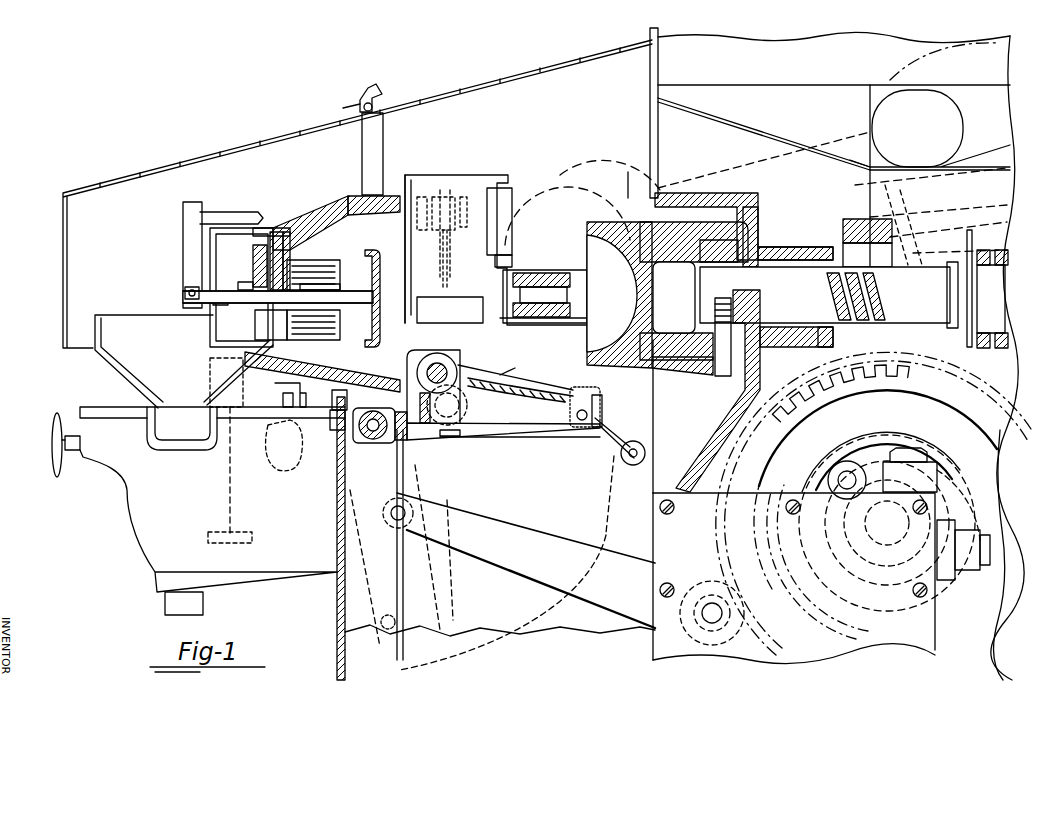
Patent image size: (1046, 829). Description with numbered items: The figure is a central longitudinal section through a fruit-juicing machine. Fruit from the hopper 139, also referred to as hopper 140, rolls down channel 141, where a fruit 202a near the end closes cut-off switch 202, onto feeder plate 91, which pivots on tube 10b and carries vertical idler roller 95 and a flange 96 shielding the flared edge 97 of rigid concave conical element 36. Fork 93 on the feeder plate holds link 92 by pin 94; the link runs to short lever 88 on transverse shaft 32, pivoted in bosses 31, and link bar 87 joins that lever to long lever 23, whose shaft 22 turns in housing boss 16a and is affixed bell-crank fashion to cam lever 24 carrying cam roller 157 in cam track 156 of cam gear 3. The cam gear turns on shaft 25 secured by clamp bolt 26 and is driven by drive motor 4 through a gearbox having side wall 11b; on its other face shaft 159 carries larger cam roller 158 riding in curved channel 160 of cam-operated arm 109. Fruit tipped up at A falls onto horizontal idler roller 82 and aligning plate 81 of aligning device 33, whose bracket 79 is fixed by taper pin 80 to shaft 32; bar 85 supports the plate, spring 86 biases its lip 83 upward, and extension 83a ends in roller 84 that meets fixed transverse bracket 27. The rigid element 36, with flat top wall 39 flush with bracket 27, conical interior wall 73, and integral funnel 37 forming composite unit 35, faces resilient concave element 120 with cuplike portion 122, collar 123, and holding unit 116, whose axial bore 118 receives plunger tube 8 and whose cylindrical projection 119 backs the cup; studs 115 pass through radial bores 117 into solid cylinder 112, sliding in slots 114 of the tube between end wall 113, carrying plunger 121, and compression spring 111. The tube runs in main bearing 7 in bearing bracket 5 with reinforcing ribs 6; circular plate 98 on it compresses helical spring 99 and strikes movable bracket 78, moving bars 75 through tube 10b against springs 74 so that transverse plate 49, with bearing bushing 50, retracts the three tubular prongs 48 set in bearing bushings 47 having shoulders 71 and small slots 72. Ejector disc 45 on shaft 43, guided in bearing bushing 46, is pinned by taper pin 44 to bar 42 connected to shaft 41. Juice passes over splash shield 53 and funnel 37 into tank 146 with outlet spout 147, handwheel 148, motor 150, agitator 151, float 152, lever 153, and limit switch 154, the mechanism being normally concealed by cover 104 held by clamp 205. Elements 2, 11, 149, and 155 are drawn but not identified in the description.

The cover 104 is at (106, 182).
The clamp 205 is at (357, 94).
The flat top wall 39 is at (350, 194).
The rigid concave conical element 36 is at (312, 218).
The conical interior wall 73 is at (287, 228).
The small slots 72 is at (286, 230).
The shoulders 71 is at (272, 230).
The shaft 41 is at (218, 210).
The bar 42 is at (181, 246).
The splash shield 53 is at (209, 330).
The transverse plate 49 is at (252, 256).
The bearing bushing 50 is at (239, 275).
The shaft 43 is at (222, 306).
The taper pin 44 is at (181, 292).
The bearing bushings 47 is at (340, 271).
The tubular prongs 48 is at (340, 284).
The bearing bushing 46 is at (340, 318).
The ejector disc 45 is at (380, 318).
The flared edge 97 is at (403, 250).
The feeder plate 91 is at (428, 174).
The vertical idler roller 95 is at (512, 190).
The link 92 is at (460, 324).
The fork 93 is at (460, 197).
The pin 94 is at (467, 207).
The flange 96 is at (442, 236).
The cut-off switch 202 is at (572, 172).
The fruit 202a is at (598, 160).
The channel 141 is at (630, 173).
The tube 10b is at (513, 324).
The springs 74 is at (538, 272).
The bars 75 is at (562, 272).
The cuplike portion 122 is at (598, 280).
The plunger 121 is at (674, 297).
The holding unit 116 is at (760, 210).
The axial bore 118 is at (760, 238).
The plunger tube end wall 113 is at (790, 247).
The external collar 123 is at (683, 220).
The cylindrical projection 119 is at (705, 238).
The movable bracket 78 is at (852, 217).
The hopper 139 is at (777, 140).
The hopper 140 is at (950, 146).
The solid cylinder 112 is at (825, 295).
The compression spring 111 is at (852, 325).
The plunger tube 8 is at (896, 325).
The circular plate 98 is at (965, 341).
The helical spring 99 is at (983, 349).
The cam-operated arm 109 is at (1002, 388).
The cam gear 3 is at (784, 441).
The reinforcing ribs 6 is at (770, 405).
The curved channel 160 is at (958, 447).
The cam track 156 is at (866, 445).
The cam roller 157 is at (844, 460).
The clamp bolt 26 is at (908, 446).
The larger cam roller 158 is at (949, 480).
The shaft 159 is at (963, 494).
The side wall 11b is at (978, 513).
The plate 2 is at (650, 521).
The resilient concave element 120 is at (622, 380).
The cam lever 24 is at (724, 552).
The shaft 25 is at (883, 546).
The bracket 155 is at (965, 583).
The housing boss 16a is at (708, 632).
The shaft 22 is at (718, 626).
The drive motor 4 is at (1000, 650).
The bearing bracket 5 is at (718, 425).
The slots 114 is at (790, 349).
The main bearing 7 is at (819, 349).
The radial bores 117 is at (700, 362).
The studs 115 is at (723, 378).
The horizontal idler roller 82 is at (462, 358).
The aligning plate 81 is at (515, 398).
The fruit position A is at (516, 364).
The aligning device 33 is at (548, 430).
The bracket 79 is at (482, 434).
The short lever 88 is at (448, 438).
The lip 83 is at (440, 432).
The link bar 87 is at (452, 445).
The bosses 31 is at (358, 448).
The transverse shaft 32 is at (380, 444).
The bar 85 is at (582, 432).
The spring 86 is at (597, 432).
The link 11 is at (640, 466).
The extension 83a is at (615, 470).
The roller 84 is at (609, 486).
The long lever 23 is at (526, 583).
The fixed transverse bracket 27 is at (335, 600).
The composite unit 35 is at (276, 368).
The funnel 37 is at (103, 380).
The bar 149 is at (110, 407).
The handwheel 148 is at (56, 480).
The tank 146 is at (263, 586).
The outlet spout 147 is at (205, 603).
The motor 150 is at (241, 410).
The agitator 151 is at (250, 535).
The float 152 is at (278, 472).
The lever 153 is at (304, 395).
The limit switch 154 is at (335, 412).
The taper pin 80 is at (330, 435).